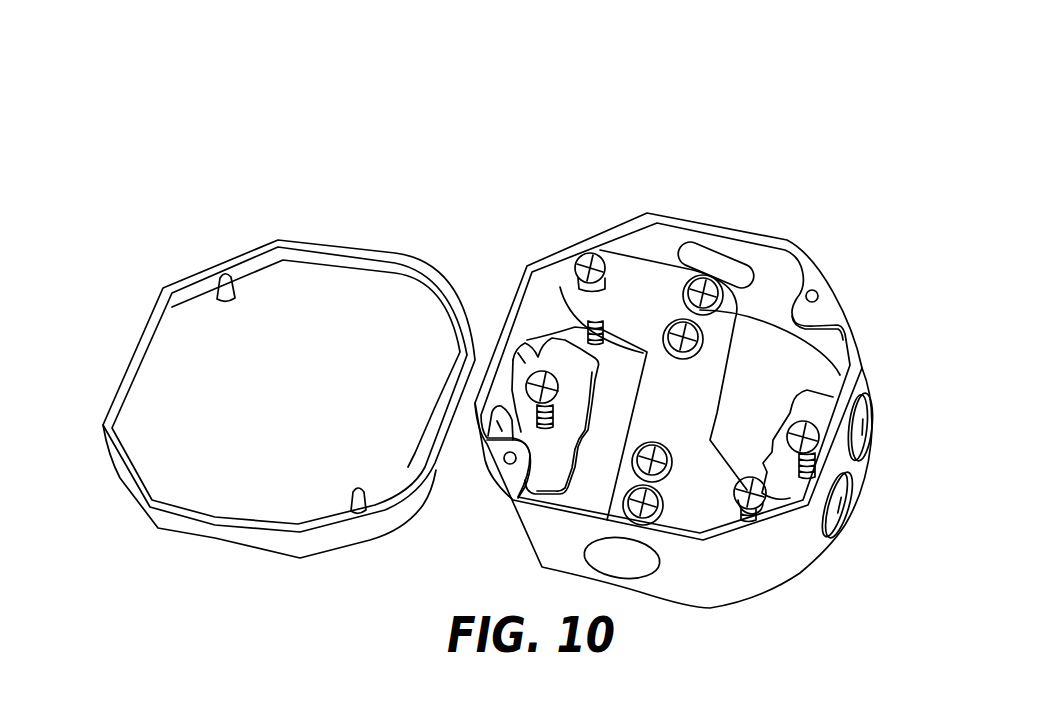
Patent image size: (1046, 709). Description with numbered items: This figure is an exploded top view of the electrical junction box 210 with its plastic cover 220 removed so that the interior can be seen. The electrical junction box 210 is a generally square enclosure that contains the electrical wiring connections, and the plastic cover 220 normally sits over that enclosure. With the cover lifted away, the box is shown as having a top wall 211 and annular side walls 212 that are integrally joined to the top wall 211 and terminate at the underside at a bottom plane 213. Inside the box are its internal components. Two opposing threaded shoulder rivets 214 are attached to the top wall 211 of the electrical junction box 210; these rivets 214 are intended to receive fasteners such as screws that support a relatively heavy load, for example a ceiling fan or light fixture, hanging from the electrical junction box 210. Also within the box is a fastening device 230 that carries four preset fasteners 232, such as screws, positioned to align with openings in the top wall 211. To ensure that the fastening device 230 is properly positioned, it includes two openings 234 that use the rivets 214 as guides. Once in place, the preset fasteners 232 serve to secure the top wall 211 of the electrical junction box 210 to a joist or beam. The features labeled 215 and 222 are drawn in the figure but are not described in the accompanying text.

The electrical junction box 210 is at (701, 394).
The top wall 211 is at (800, 358).
The annular side walls 212 is at (770, 262).
The bottom plane 213 is at (848, 366).
The threaded shoulder rivets 214 is at (608, 262).
The screw hole 215 is at (820, 293).
The plastic cover 220 is at (368, 250).
The locating pin 222 is at (225, 276).
The fastening device 230 is at (722, 407).
The preset fasteners 232 is at (662, 331).
The openings 234 is at (560, 287).